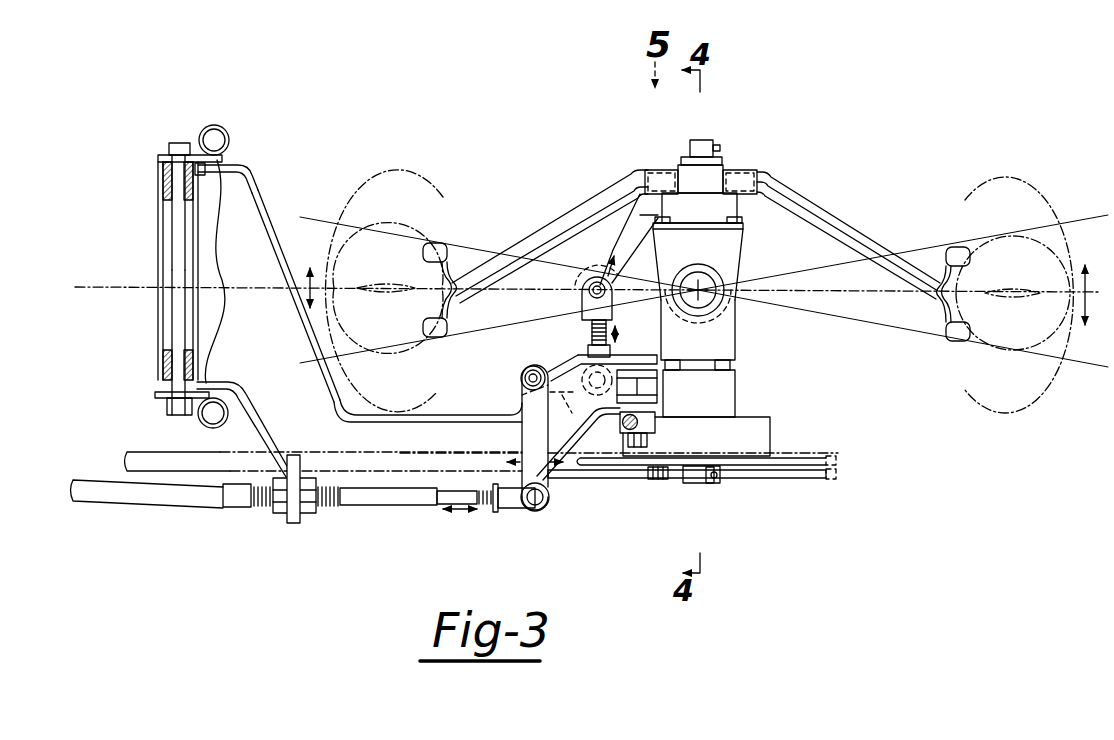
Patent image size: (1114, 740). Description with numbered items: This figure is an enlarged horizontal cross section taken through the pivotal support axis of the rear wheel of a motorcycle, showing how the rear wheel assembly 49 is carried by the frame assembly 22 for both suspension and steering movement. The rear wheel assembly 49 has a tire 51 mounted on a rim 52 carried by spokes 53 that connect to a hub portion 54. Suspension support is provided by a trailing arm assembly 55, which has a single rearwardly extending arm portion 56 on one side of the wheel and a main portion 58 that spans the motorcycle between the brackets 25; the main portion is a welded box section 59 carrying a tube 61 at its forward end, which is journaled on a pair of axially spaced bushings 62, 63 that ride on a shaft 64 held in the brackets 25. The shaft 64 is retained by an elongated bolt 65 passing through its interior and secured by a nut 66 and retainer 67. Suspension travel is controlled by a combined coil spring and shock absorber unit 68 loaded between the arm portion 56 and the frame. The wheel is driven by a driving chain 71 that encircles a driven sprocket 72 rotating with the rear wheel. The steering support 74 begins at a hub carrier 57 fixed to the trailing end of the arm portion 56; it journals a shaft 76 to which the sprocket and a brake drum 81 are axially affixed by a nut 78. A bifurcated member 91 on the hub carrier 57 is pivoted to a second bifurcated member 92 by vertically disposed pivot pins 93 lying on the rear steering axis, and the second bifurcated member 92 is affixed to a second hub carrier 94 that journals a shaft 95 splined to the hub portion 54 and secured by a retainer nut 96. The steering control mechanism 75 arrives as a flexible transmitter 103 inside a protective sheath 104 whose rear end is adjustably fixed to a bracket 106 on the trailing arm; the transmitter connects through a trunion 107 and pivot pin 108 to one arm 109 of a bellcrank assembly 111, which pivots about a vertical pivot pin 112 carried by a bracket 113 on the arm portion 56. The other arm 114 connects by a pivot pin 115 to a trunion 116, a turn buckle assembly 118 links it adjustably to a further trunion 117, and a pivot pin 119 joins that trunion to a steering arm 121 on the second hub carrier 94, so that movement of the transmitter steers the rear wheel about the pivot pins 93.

The frame assembly 22 is at (222, 127).
The bracket 25 is at (160, 157).
The rear wheel assembly 49 is at (522, 244).
The tire 51 is at (380, 229).
The rim 52 is at (433, 241).
The spokes 53 is at (581, 207).
The hub portion 54 is at (683, 170).
The trailing arm assembly 55 is at (250, 212).
The rearwardly extending arm portion 56 is at (423, 420).
The hub carrier 57 is at (722, 393).
The main portion 58 is at (262, 243).
The box section 59 is at (213, 190).
The tube 61 is at (158, 215).
The bushing 62 is at (163, 186).
The bushing 63 is at (160, 362).
The shaft 64 is at (172, 266).
The elongated bolt 65 is at (176, 255).
The nut 66 is at (166, 417).
The retainer 67 is at (160, 398).
The combined coil spring and shock absorber unit 68 is at (655, 425).
The driving chain 71 is at (203, 471).
The driven sprocket 72 is at (765, 468).
The steering support 74 is at (783, 350).
The steering control mechanism 75 is at (617, 528).
The shaft 76 is at (695, 484).
The nut 78 is at (712, 484).
The brake drum 81 is at (772, 432).
The bifurcated member 91 is at (730, 342).
The second bifurcated member 92 is at (740, 242).
The pivot pins 93 is at (705, 298).
The second hub carrier 94 is at (737, 208).
The shaft 95 is at (700, 140).
The retainer nut 96 is at (718, 145).
The flexible transmitter 103 is at (482, 513).
The protective sheath 104 is at (98, 493).
The bracket 106 is at (292, 523).
The trunion 107 is at (510, 508).
The pivot pin 108 is at (541, 503).
The arm 109 is at (523, 442).
The bellcrank assembly 111 is at (545, 434).
The pivot pin 112 is at (522, 372).
The bracket 113 is at (552, 366).
The arm 114 is at (556, 426).
The pivot pin 115 is at (590, 375).
The trunion 116 is at (608, 370).
The trunion 117 is at (585, 293).
The turn buckle assembly 118 is at (592, 335).
The pivot pin 119 is at (600, 280).
The steering arm 121 is at (620, 240).